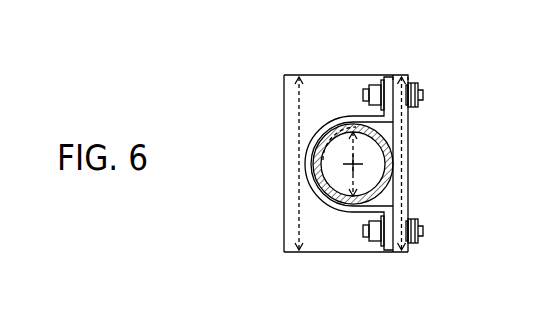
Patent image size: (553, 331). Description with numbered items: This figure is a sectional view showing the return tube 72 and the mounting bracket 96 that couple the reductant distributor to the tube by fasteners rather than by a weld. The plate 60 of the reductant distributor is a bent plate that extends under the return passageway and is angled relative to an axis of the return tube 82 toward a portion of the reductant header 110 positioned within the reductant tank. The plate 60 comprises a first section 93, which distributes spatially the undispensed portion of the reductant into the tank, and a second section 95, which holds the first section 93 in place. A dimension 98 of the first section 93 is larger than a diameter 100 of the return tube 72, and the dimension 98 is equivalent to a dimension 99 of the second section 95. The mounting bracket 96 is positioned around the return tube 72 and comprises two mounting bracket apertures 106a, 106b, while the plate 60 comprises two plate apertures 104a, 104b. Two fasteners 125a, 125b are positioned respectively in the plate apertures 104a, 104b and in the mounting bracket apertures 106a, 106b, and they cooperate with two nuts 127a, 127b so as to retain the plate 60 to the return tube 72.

The plate 60 is at (276, 233).
The return tube 72 is at (323, 131).
The return tube 82 is at (363, 172).
The first section 93 is at (323, 242).
The second section 95 is at (424, 81).
The mounting bracket 96 is at (403, 76).
The dimension of the first section 98 is at (298, 96).
The dimension of the second section 99 is at (402, 170).
The diameter of the return tube 100 is at (322, 128).
The plate aperture 104a is at (407, 110).
The plate aperture 104b is at (408, 213).
The mounting bracket aperture 106a is at (386, 83).
The mounting bracket aperture 106b is at (385, 251).
The fastener 125a is at (422, 92).
The fastener 125b is at (418, 233).
The nut 127a is at (381, 85).
The nut 127b is at (373, 243).
The reductant header 110 is at (287, 322).